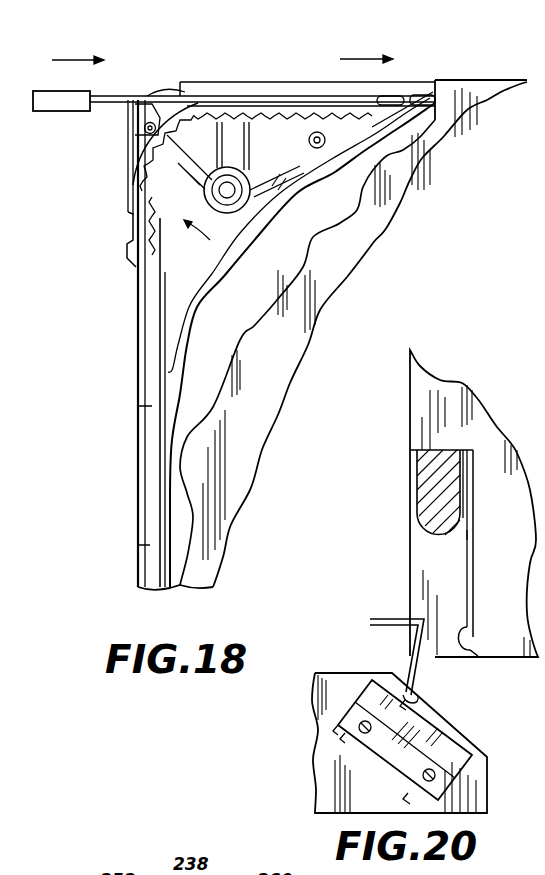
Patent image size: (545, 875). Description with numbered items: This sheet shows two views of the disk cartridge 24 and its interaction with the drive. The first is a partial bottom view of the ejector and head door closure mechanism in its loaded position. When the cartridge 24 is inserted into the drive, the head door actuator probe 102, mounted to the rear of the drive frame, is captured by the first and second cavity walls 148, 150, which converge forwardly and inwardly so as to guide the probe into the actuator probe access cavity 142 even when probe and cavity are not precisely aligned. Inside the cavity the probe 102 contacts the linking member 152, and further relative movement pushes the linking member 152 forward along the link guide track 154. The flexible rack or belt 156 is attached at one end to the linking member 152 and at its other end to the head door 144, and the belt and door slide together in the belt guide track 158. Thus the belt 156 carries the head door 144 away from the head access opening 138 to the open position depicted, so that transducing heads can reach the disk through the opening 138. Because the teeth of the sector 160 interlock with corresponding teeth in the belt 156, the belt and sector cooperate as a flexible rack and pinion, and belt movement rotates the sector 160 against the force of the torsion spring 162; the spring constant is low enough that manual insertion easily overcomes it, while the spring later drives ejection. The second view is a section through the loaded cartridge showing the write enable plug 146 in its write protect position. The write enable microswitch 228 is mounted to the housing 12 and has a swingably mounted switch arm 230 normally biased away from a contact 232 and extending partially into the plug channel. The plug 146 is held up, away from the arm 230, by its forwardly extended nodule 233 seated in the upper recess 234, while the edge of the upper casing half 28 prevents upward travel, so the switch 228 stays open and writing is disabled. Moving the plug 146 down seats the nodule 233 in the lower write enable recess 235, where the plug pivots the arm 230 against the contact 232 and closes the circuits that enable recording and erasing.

In FIG. 20, the housing 12 is at (327, 748).
In FIG. 18, the cartridge 24 is at (477, 78).
In FIG. 20, the upper casing half 28 is at (427, 400).
In FIG. 18, the head door actuator probe 102 is at (217, 97).
In FIG. 18, the head access opening 138 is at (145, 493).
In FIG. 18, the actuator probe access cavity 142 is at (146, 92).
In FIG. 18, the head door 144 is at (152, 295).
In FIG. 20, the write enable plug 146 is at (430, 494).
In FIG. 18, the first cavity wall 148 is at (183, 85).
In FIG. 18, the second cavity wall 150 is at (128, 112).
In FIG. 18, the linking member 152 is at (370, 98).
In FIG. 18, the link guide track 154 is at (407, 99).
In FIG. 18, the flexible rack or belt 156 is at (130, 210).
In FIG. 18, the belt guide track 158 is at (157, 427).
In FIG. 18, the sector 160 is at (130, 176).
In FIG. 18, the torsion spring 162 is at (262, 197).
In FIG. 20, the write enable microswitch 228 is at (453, 736).
In FIG. 20, the switch arm 230 is at (397, 617).
In FIG. 20, the contact 232 is at (417, 697).
In FIG. 20, the nodule 233 is at (458, 517).
In FIG. 20, the upper recess 234 is at (467, 535).
In FIG. 20, the lower write enable recess 235 is at (463, 627).